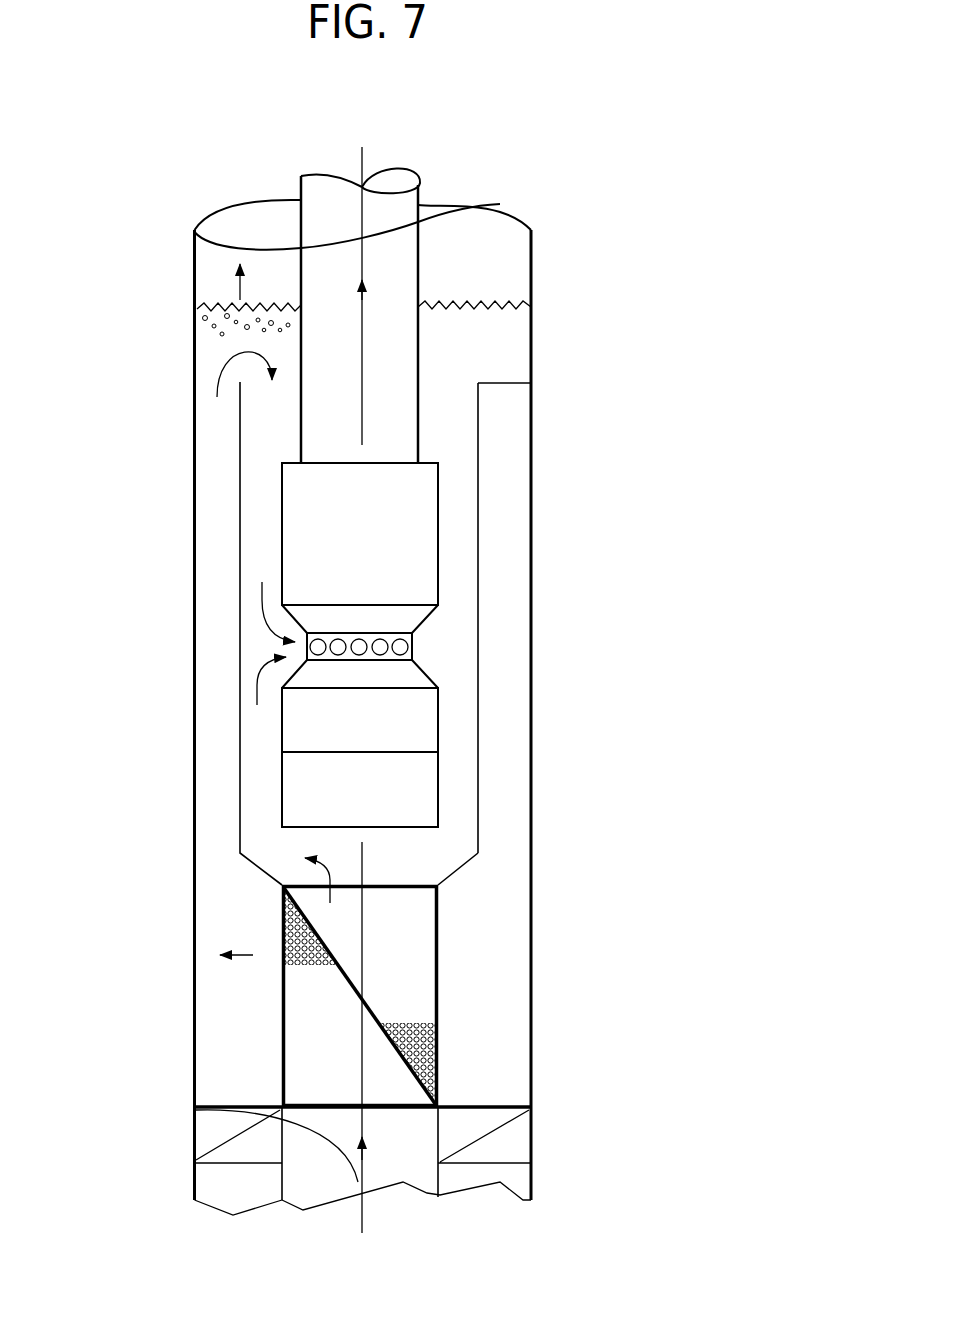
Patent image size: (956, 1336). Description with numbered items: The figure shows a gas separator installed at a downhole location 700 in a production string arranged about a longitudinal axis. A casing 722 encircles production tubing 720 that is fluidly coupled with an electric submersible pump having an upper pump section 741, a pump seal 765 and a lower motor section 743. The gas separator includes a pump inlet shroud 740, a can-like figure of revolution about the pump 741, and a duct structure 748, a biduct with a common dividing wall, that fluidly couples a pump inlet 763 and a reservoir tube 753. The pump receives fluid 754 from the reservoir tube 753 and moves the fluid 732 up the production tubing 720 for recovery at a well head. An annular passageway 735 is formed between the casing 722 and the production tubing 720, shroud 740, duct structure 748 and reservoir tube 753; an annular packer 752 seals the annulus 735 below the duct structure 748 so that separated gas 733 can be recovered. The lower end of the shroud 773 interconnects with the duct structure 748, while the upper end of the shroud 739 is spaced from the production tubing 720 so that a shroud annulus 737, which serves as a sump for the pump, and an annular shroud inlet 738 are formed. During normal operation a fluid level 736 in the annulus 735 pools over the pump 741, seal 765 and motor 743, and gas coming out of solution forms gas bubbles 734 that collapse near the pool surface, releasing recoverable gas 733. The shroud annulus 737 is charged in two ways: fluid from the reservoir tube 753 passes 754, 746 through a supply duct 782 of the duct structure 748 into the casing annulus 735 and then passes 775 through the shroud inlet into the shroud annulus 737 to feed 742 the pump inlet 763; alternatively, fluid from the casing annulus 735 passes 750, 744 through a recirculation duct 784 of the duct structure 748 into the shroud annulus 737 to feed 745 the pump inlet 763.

The downhole location 700 is at (482, 106).
The production tubing 720 is at (418, 205).
The casing 722 is at (531, 240).
The fluid 732 is at (362, 338).
The separated gas 733 is at (240, 290).
The gas bubbles 734 is at (217, 335).
The annular passageway 735 is at (500, 250).
The fluid level 736 is at (531, 305).
The shroud annulus 737 is at (265, 445).
The annular shroud inlet 738 is at (447, 387).
The upper end of the shroud 739 is at (478, 383).
The pump inlet shroud 740 is at (480, 468).
The upper pump section 741 is at (438, 547).
The feed flow to pump inlet 742 is at (262, 620).
The lower motor section 743 is at (438, 800).
The recirculation flow 744 is at (330, 872).
The feed flow to pump inlet 745 is at (257, 678).
The supply flow 746 is at (243, 950).
The duct structure 748 is at (444, 965).
The recirculation flow 750 is at (456, 1068).
The annular packer 752 is at (503, 1142).
The reservoir tube 753 is at (282, 1187).
The fluid from reservoir tube 754 is at (282, 1108).
The pump inlet 763 is at (412, 648).
The pump seal 765 is at (438, 723).
The lower end of the shroud 773 is at (438, 888).
The flow into shroud annulus 775 is at (217, 383).
The supply duct 782 is at (323, 1063).
The recirculation duct 784 is at (402, 1003).